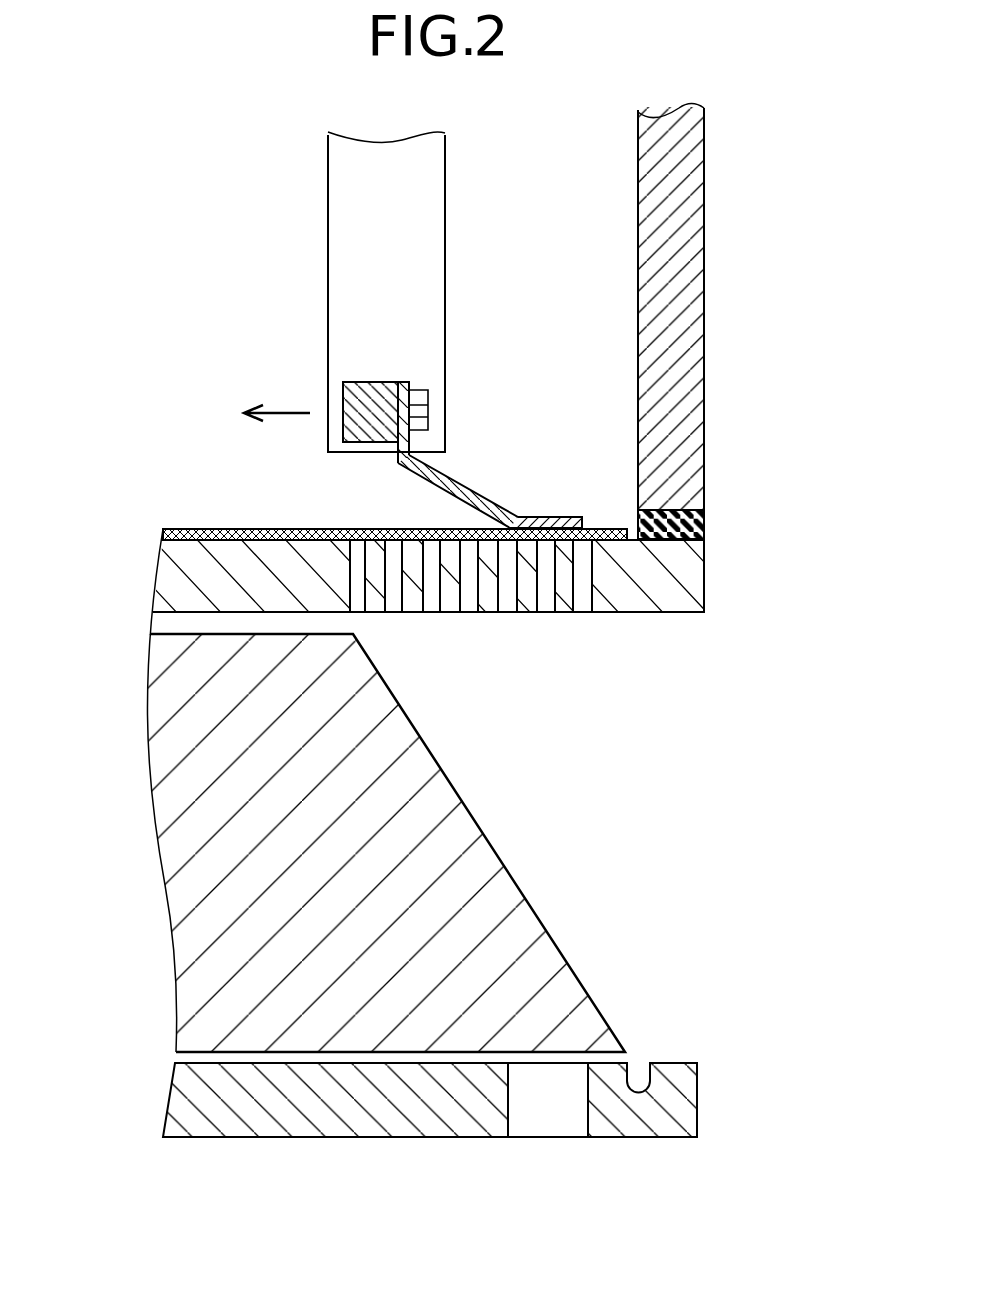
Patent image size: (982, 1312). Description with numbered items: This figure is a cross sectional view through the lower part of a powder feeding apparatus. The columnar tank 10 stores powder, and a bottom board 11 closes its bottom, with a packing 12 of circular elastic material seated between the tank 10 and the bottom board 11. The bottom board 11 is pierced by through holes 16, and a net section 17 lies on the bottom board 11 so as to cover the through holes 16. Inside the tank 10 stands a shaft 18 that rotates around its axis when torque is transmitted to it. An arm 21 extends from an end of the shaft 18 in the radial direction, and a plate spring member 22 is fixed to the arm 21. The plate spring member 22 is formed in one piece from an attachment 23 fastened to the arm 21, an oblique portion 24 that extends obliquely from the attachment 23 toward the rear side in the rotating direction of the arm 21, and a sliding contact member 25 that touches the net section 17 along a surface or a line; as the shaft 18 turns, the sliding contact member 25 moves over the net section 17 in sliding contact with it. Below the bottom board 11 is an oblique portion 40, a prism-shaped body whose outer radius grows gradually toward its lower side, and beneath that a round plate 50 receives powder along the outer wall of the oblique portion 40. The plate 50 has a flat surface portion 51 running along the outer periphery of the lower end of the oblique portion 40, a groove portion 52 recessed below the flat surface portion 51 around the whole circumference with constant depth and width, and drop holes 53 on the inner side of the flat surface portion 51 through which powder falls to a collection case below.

The tank 10 is at (693, 233).
The bottom board 11 is at (412, 614).
The packing 12 is at (694, 522).
The through holes 16 is at (585, 595).
The net section 17 is at (258, 528).
The shaft 18 is at (423, 196).
The arm 21 is at (365, 393).
The plate spring member 22 is at (500, 440).
The attachment 23 is at (405, 386).
The oblique portion 24 is at (462, 492).
The sliding contact member 25 is at (548, 476).
The oblique portion 40 is at (485, 830).
The plate 50 is at (438, 1079).
The flat surface portion 51 is at (680, 1063).
The groove portion 52 is at (642, 1072).
The drop holes 53 is at (588, 1103).